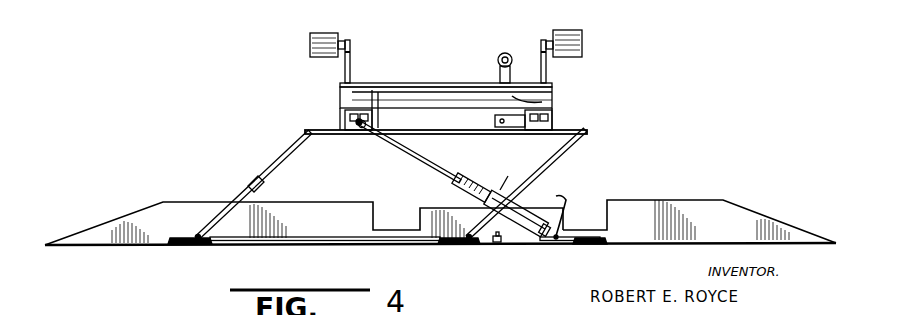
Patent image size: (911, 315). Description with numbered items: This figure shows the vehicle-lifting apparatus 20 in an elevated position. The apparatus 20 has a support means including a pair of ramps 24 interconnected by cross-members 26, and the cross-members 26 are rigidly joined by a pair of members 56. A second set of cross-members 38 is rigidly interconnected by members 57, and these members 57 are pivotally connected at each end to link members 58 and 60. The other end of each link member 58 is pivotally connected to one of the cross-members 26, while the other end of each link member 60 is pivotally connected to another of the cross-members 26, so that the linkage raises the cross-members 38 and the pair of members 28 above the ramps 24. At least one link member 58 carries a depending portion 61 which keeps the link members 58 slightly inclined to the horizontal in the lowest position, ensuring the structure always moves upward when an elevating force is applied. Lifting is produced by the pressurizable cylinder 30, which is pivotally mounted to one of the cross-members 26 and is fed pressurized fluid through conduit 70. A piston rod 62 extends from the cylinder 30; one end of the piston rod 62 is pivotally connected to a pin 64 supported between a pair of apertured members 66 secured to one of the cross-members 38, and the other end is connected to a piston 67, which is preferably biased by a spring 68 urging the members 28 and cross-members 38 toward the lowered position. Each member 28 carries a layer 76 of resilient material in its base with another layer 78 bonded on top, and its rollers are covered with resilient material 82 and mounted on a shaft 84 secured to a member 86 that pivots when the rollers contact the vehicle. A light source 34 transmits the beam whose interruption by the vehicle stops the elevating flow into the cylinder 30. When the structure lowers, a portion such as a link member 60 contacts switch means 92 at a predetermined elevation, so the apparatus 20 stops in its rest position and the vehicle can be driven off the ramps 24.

The apparatus 20 is at (705, 192).
The ramp 24 is at (195, 206).
The cross-member 26 is at (182, 246).
The member 28 is at (425, 84).
The pressurizable cylinder 30 is at (510, 184).
The light source 34 is at (505, 52).
The cross-member 38 is at (342, 116).
The member 56 is at (316, 241).
The member 57 is at (458, 134).
The link member 58 is at (288, 156).
The link member 60 is at (588, 137).
The depending portion 61 is at (266, 185).
The piston rod 62 is at (426, 150).
The pin 64 is at (372, 90).
The apertured member 66 is at (364, 128).
The piston 67 is at (506, 174).
The spring 68 is at (466, 182).
The conduit 70 is at (568, 196).
The layer 76 is at (550, 89).
The layer 78 is at (442, 86).
The resilient material 82 is at (310, 44).
The shaft 84 is at (346, 40).
The member 86 is at (340, 58).
The switch means 92 is at (498, 242).